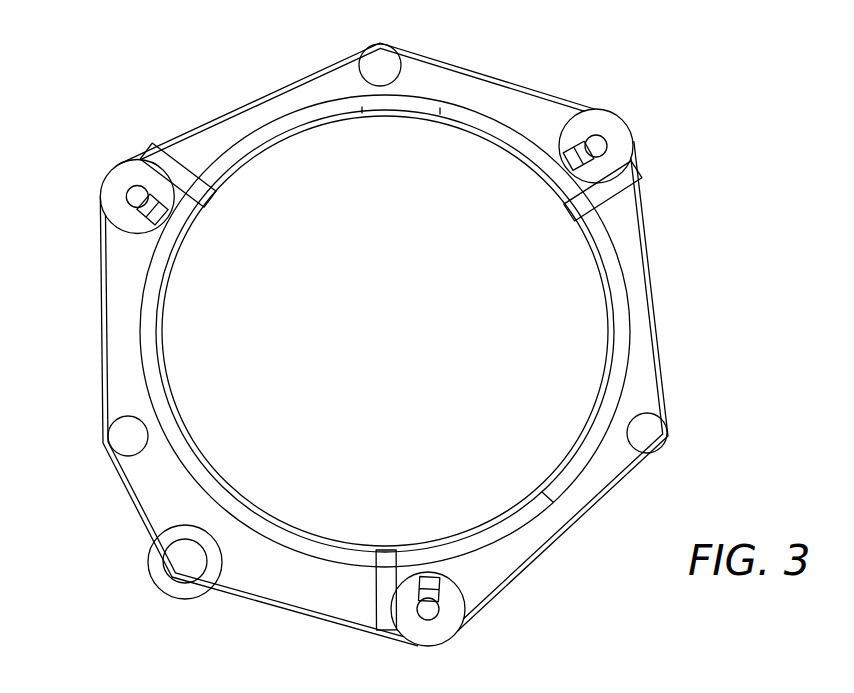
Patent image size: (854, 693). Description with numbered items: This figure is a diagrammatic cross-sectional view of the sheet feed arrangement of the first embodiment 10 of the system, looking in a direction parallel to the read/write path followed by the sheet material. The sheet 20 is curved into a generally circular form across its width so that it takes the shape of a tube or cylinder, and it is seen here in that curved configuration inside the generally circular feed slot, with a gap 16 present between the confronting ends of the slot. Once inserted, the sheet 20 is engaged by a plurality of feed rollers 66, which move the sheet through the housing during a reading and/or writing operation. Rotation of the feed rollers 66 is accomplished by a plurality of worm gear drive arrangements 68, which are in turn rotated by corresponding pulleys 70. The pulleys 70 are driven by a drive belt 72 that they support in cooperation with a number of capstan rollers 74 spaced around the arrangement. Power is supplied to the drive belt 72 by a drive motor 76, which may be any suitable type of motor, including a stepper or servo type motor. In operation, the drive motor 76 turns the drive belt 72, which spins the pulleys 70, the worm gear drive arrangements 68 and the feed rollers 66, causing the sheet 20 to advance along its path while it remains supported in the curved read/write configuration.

The first embodiment 10 is at (696, 72).
The gap 16 is at (363, 103).
The sheet 20 is at (548, 503).
The feed rollers 66 is at (147, 158).
The worm gear drive arrangements 68 is at (124, 189).
The pulleys 70 is at (101, 193).
The drive belt 72 is at (660, 339).
The capstan rollers 74 is at (380, 44).
The drive motor 76 is at (150, 590).